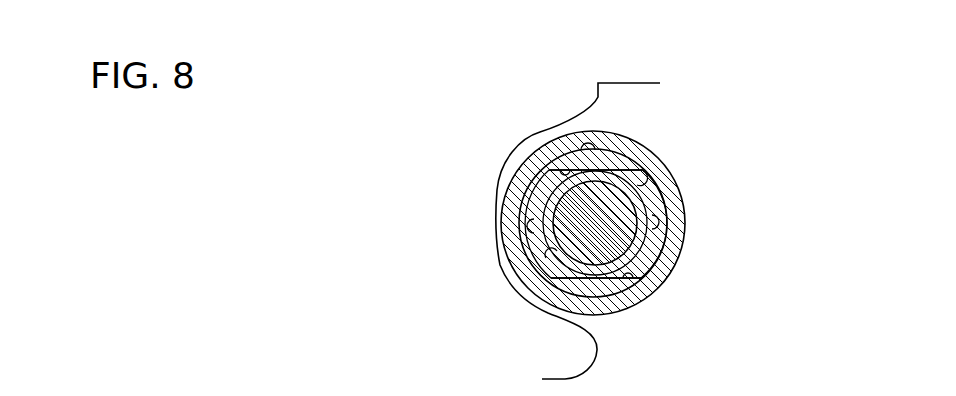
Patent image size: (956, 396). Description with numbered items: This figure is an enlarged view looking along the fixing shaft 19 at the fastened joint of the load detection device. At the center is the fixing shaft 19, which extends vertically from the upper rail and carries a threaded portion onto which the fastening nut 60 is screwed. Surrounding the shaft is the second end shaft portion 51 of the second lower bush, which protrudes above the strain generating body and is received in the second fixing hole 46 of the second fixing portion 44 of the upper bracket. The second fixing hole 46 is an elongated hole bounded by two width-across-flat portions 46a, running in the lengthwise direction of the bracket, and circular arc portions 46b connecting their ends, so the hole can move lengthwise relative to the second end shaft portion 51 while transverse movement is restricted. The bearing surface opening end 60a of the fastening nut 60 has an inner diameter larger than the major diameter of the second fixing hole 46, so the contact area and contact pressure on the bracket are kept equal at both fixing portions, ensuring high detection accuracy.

The second fixing portion 44 is at (614, 98).
The fastening nut 60 is at (632, 138).
The bearing surface opening end 60a is at (582, 152).
The second fixing hole 46 is at (637, 195).
The width-across-flat portion 46a is at (560, 172).
The circular arc portion 46b is at (530, 233).
The fixing shaft 19 is at (612, 207).
The second end shaft portion 51 is at (557, 255).